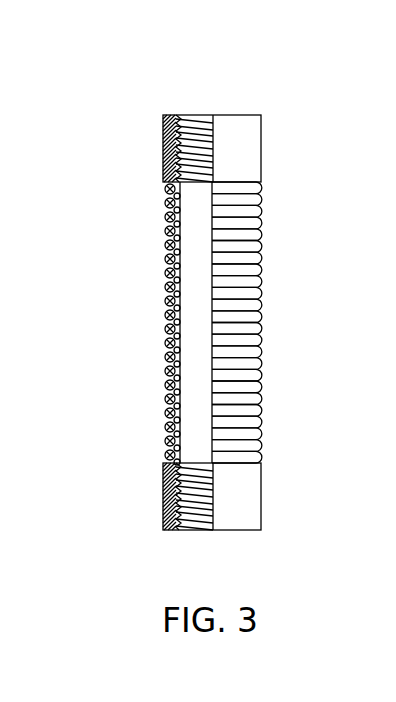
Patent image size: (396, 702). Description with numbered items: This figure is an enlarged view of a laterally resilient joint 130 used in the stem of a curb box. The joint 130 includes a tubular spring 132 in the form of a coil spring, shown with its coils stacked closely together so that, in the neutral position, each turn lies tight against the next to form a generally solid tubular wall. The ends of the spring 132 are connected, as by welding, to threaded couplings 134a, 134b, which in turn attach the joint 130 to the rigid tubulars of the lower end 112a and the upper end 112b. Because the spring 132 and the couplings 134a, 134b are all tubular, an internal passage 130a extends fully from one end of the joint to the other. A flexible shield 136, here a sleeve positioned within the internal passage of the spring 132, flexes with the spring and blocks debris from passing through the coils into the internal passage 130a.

The laterally resilient joint 130 is at (58, 82).
The lower end 112a is at (156, 515).
The upper end 112b is at (168, 124).
The threaded coupling 134a is at (185, 527).
The threaded coupling 134b is at (182, 120).
The shield 136 is at (207, 237).
The internal passage 130a is at (207, 309).
The spring 132 is at (263, 362).